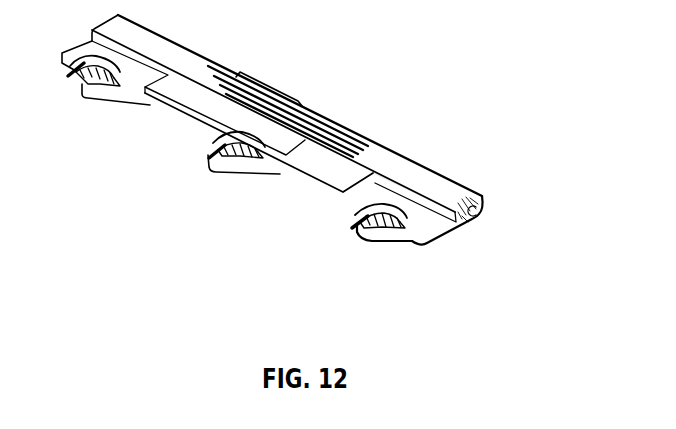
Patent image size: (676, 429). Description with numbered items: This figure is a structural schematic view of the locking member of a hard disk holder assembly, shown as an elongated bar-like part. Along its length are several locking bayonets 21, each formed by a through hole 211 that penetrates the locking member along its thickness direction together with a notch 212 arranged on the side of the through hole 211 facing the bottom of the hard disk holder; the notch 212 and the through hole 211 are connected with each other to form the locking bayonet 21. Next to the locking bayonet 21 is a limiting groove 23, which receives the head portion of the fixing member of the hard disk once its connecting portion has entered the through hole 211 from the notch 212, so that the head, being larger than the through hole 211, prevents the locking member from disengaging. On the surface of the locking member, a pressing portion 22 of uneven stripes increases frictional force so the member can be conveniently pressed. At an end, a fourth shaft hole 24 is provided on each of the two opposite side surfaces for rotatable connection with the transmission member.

The locking bayonet 21 is at (245, 134).
The pressing portion 22 is at (372, 142).
The limiting groove 23 is at (379, 192).
The fourth shaft hole 24 is at (478, 211).
The through hole 211 is at (362, 213).
The notch 212 is at (352, 223).